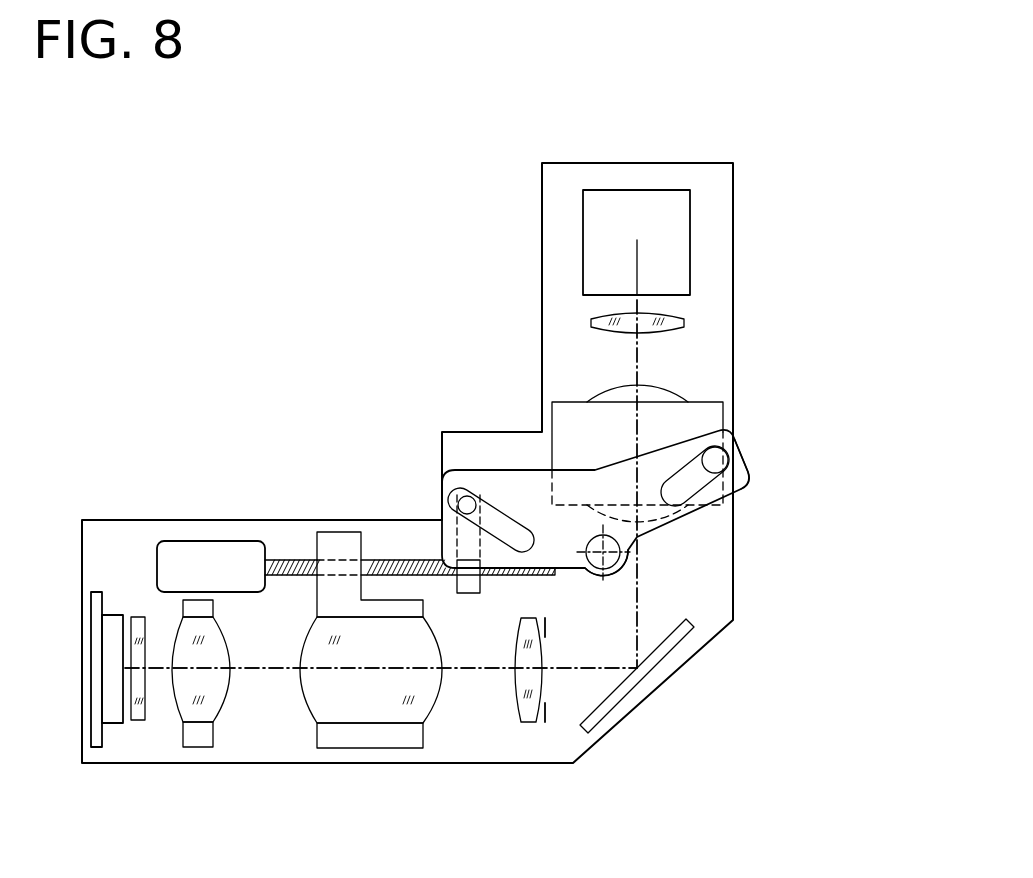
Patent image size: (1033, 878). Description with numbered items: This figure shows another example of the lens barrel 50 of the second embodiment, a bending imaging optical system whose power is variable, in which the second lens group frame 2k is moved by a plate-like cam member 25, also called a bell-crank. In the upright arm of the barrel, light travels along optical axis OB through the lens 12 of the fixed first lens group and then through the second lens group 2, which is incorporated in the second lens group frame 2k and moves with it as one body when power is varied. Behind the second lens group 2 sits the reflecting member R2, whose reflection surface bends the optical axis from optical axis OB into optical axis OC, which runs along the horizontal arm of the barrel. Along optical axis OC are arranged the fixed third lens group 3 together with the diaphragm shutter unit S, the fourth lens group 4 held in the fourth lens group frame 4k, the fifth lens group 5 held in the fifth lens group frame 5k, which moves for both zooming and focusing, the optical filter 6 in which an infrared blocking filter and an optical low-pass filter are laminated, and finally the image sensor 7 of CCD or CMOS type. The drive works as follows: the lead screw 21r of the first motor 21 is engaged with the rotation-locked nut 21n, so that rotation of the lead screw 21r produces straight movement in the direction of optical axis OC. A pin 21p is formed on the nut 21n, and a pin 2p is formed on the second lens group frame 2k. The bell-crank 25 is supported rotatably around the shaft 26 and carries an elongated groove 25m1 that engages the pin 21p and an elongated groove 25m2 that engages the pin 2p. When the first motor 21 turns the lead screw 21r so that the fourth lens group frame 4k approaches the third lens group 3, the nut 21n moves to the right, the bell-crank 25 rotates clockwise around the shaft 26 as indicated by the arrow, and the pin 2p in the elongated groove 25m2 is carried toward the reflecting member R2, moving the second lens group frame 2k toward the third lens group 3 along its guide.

The lens barrel 50 is at (487, 183).
The lens 12 is at (685, 321).
The second lens group 2 is at (652, 390).
The second lens group frame 2k is at (690, 413).
The pin 2p is at (722, 453).
The cam member 25 is at (525, 480).
The elongated groove 25m1 is at (550, 569).
The elongated groove 25m2 is at (750, 483).
The shaft 26 is at (620, 563).
The optical axis OB is at (637, 600).
The first motor 21 is at (205, 565).
The lead screw 21r is at (293, 558).
The nut 21n is at (470, 593).
The pin 21p is at (453, 498).
The optical filter 6 is at (140, 625).
The image sensor 7 is at (113, 638).
The fifth lens group 5 is at (183, 685).
The fifth lens group frame 5k is at (197, 738).
The optical axis OC is at (263, 672).
The fourth lens group 4 is at (347, 705).
The fourth lens group frame 4k is at (393, 742).
The third lens group 3 is at (525, 723).
The diaphragm shutter unit S is at (545, 713).
The reflecting member R2 is at (605, 707).